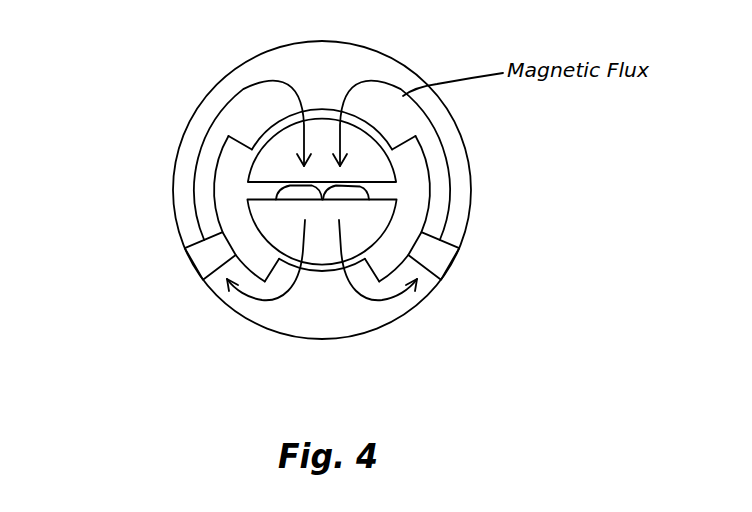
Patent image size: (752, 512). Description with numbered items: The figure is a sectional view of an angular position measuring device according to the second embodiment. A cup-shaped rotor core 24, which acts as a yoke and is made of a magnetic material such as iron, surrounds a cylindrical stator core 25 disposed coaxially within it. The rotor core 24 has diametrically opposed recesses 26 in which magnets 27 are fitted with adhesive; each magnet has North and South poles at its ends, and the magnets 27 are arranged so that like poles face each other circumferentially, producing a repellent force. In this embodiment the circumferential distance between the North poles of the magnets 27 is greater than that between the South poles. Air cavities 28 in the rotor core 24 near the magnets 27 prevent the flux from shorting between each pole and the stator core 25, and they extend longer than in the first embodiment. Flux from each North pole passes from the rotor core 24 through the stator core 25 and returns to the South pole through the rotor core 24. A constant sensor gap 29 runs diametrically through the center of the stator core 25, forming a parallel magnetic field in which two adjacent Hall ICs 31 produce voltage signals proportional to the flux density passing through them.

The rotor core 24 is at (325, 63).
The stator core 25 is at (318, 233).
The recesses 26 is at (191, 258).
The magnets 27 is at (200, 265).
The air cavities 28 is at (227, 188).
The sensor gap 29 is at (378, 193).
The Hall ICs 31 is at (337, 182).